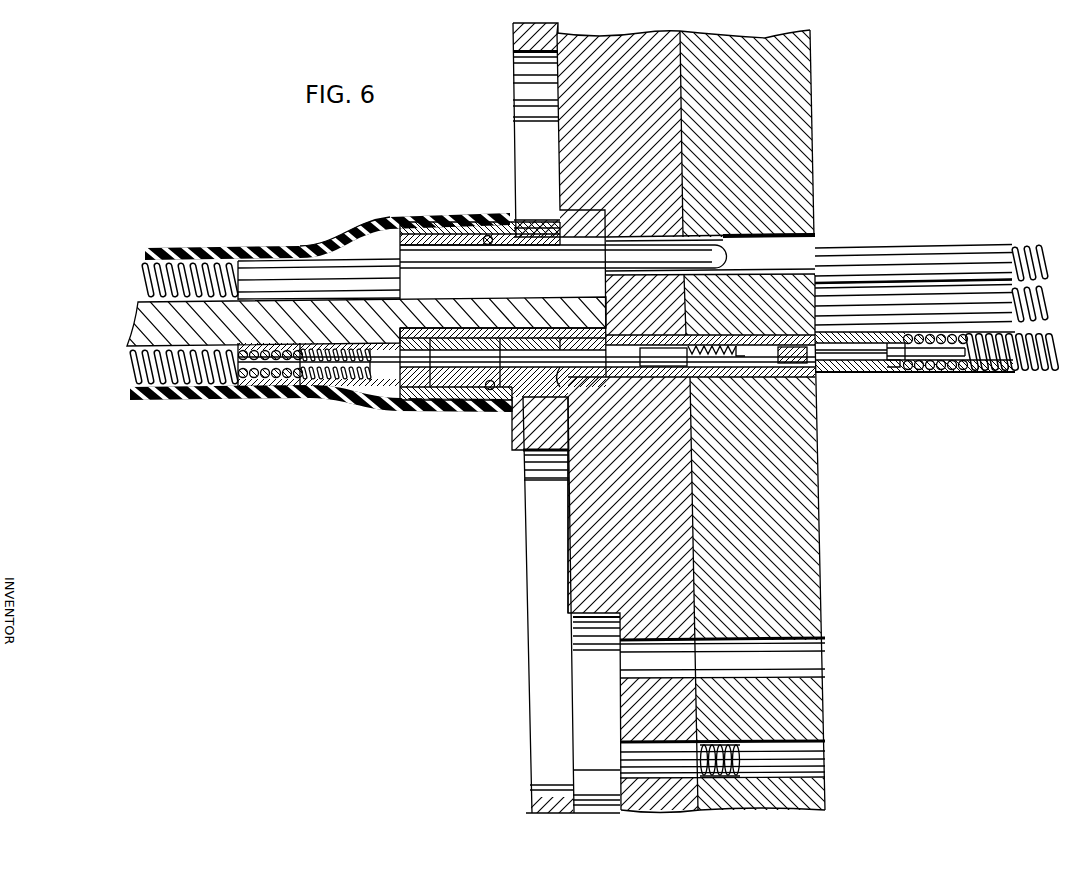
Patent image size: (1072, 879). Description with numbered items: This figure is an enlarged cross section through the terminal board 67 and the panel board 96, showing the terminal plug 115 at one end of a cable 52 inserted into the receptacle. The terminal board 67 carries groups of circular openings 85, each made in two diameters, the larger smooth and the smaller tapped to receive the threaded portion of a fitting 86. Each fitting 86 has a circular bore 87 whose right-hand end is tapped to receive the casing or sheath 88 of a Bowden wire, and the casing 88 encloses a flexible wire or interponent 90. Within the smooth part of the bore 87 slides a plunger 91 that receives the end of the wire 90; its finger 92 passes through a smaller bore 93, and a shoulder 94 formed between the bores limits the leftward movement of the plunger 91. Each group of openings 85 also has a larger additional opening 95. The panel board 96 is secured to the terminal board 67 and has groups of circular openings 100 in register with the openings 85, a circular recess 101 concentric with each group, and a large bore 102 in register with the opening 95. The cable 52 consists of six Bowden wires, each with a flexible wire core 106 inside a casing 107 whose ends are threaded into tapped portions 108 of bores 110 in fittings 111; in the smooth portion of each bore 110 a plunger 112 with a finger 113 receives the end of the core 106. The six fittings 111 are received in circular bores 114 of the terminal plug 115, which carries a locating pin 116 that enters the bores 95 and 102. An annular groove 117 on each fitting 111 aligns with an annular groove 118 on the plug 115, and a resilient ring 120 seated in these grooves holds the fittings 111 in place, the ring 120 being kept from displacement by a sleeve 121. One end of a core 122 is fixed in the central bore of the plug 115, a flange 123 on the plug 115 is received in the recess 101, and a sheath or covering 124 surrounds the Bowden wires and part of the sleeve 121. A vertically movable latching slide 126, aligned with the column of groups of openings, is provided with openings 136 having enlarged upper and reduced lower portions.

The cable 52 is at (174, 249).
The terminal board 67 is at (808, 613).
The circular opening 85 is at (798, 372).
The fitting 86 is at (958, 336).
The circular bore 87 is at (892, 375).
The casing or sheath 88 is at (1020, 248).
The flexible wire or interponent 90 is at (900, 352).
The plunger 91 is at (861, 375).
The finger 92 is at (670, 356).
The smaller bore 93 is at (688, 355).
The shoulder 94 is at (738, 343).
The additional opening 95 is at (817, 240).
The panel board 96 is at (592, 560).
The circular opening or bore 100 is at (628, 383).
The circular recess 101 is at (560, 212).
The large bore 102 is at (648, 240).
The flexible wire core or interponent 106 is at (380, 390).
The casing 107 is at (230, 268).
The tapped portion 108 is at (298, 398).
The bore 110 is at (390, 404).
The fitting 111 is at (431, 404).
The plunger 112 is at (455, 404).
The finger 113 is at (510, 403).
The circular opening or bore 114 is at (523, 422).
The terminal plug 115 is at (424, 232).
The locating pin 116 is at (633, 248).
The annular groove 117 is at (467, 404).
The annular groove 118 is at (490, 236).
The resilient ring 120 is at (486, 234).
The sleeve 121 is at (380, 220).
The cable or core 122 is at (143, 323).
The flange 123 is at (572, 490).
The sheath or covering 124 is at (182, 400).
The latching slide 126 is at (523, 447).
The opening 136 is at (523, 99).